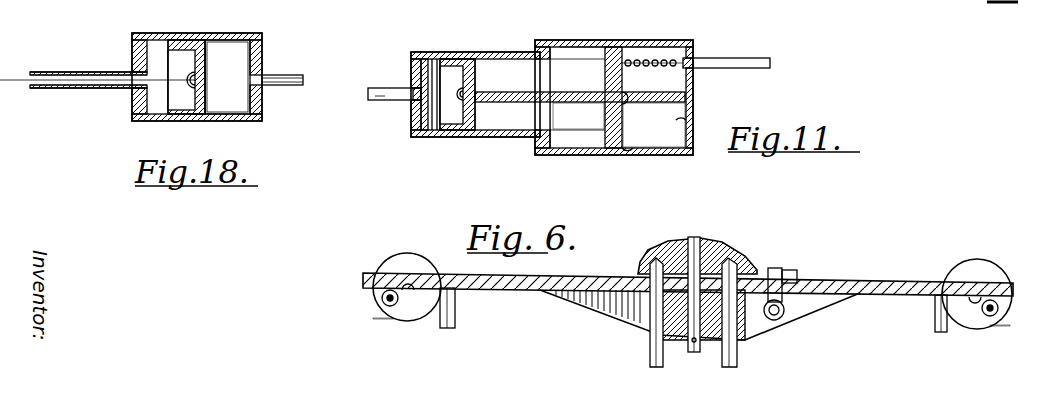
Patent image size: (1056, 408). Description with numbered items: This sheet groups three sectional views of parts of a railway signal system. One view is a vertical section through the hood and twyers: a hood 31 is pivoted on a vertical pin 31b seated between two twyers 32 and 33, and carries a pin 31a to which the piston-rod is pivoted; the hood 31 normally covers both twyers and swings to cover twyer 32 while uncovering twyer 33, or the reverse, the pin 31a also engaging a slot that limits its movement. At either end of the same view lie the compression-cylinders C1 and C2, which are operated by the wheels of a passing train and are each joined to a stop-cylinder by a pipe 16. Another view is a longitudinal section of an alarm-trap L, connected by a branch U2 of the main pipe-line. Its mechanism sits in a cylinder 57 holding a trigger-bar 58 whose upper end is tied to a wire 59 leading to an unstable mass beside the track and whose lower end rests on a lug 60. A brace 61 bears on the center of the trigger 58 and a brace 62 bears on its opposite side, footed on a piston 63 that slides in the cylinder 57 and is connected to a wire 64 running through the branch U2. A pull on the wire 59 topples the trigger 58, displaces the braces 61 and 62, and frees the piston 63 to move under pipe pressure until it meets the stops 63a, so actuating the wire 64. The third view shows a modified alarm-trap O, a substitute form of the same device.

In FIG. 18, the alarm-trap O is at (195, 33).
In FIG. 11, the alarm-trap L is at (624, 40).
In FIG. 11, the cylinder 57 is at (614, 156).
In FIG. 11, the trigger-bar 58 is at (604, 83).
In FIG. 11, the wire 59 is at (770, 64).
In FIG. 11, the lug 60 is at (604, 104).
In FIG. 11, the brace 61 is at (520, 102).
In FIG. 11, the brace 62 is at (644, 103).
In FIG. 11, the piston 63 is at (477, 77).
In FIG. 11, the stops 63a is at (553, 56).
In FIG. 11, the wire 64 is at (362, 92).
In FIG. 11, the branch U2 is at (382, 100).
In FIG. 6, the pipe 16 is at (382, 300).
In FIG. 6, the hood 31 is at (700, 292).
In FIG. 6, the pin 31a is at (797, 270).
In FIG. 6, the vertical pin 31b is at (700, 240).
In FIG. 6, the twyer 32 is at (637, 268).
In FIG. 6, the twyer 33 is at (774, 268).
In FIG. 6, the compression-cylinder C1 is at (1002, 337).
In FIG. 6, the compression-cylinder C2 is at (380, 325).